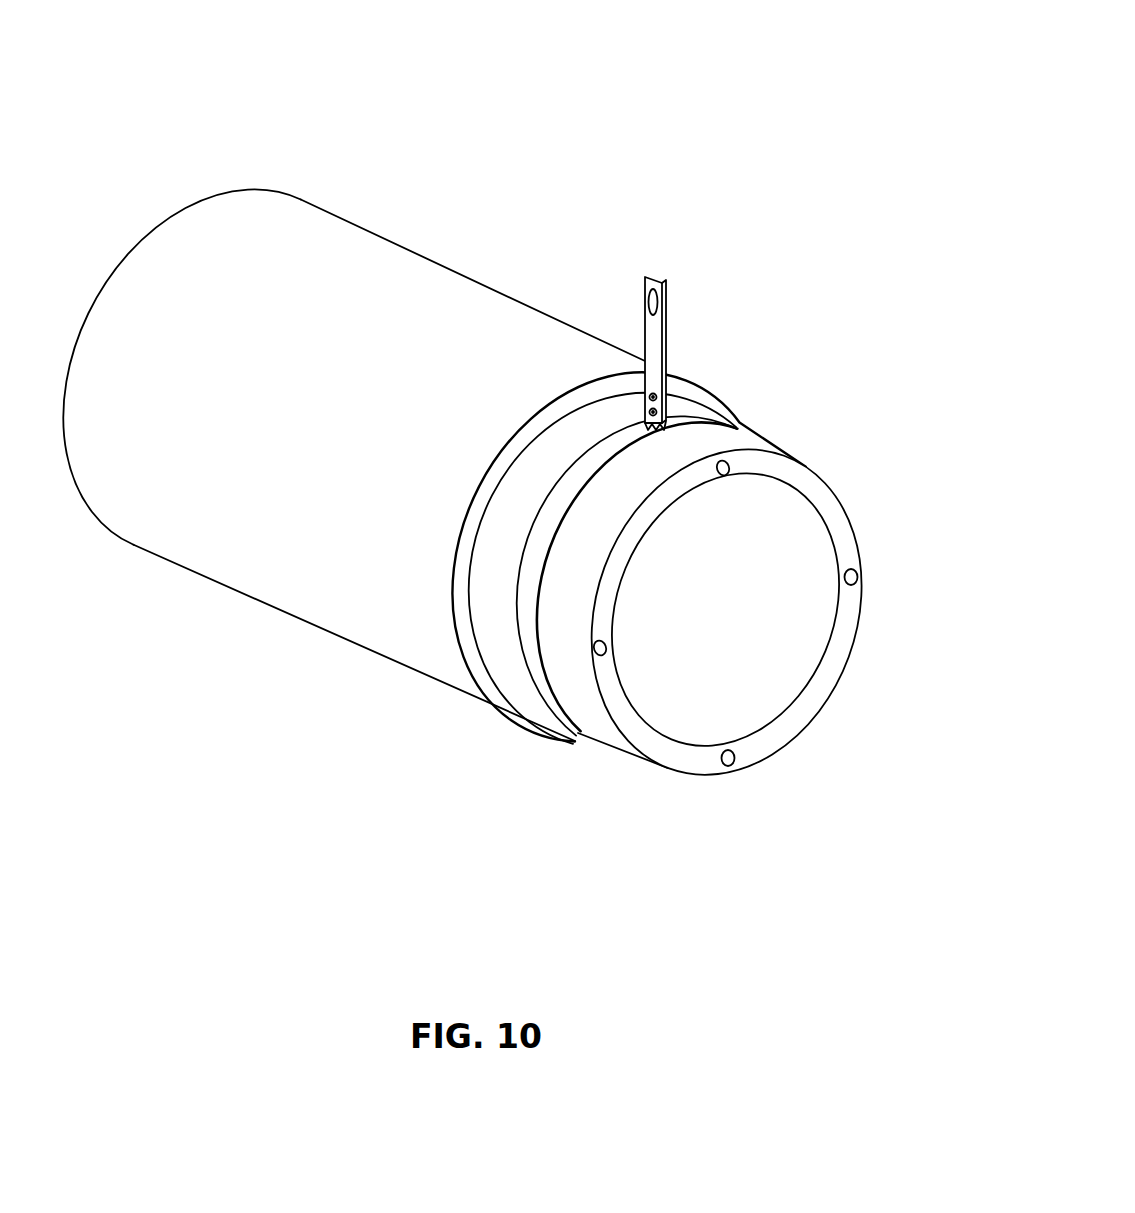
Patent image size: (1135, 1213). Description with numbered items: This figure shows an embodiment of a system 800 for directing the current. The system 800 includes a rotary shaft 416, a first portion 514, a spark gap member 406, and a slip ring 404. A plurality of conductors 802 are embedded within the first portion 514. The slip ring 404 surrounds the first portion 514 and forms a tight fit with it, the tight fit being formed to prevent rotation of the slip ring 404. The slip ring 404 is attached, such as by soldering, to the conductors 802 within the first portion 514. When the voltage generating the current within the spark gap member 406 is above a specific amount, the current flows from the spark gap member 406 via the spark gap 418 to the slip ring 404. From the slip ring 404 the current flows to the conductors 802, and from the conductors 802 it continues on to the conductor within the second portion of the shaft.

The housing assembly 800 is at (508, 448).
The cylindrical housing 416 is at (352, 278).
The mounting bracket 406 is at (653, 343).
The bracket base 418 is at (648, 426).
The ring 404 is at (528, 645).
The retaining ring 514 is at (580, 708).
The fastener holes 802 is at (858, 577).